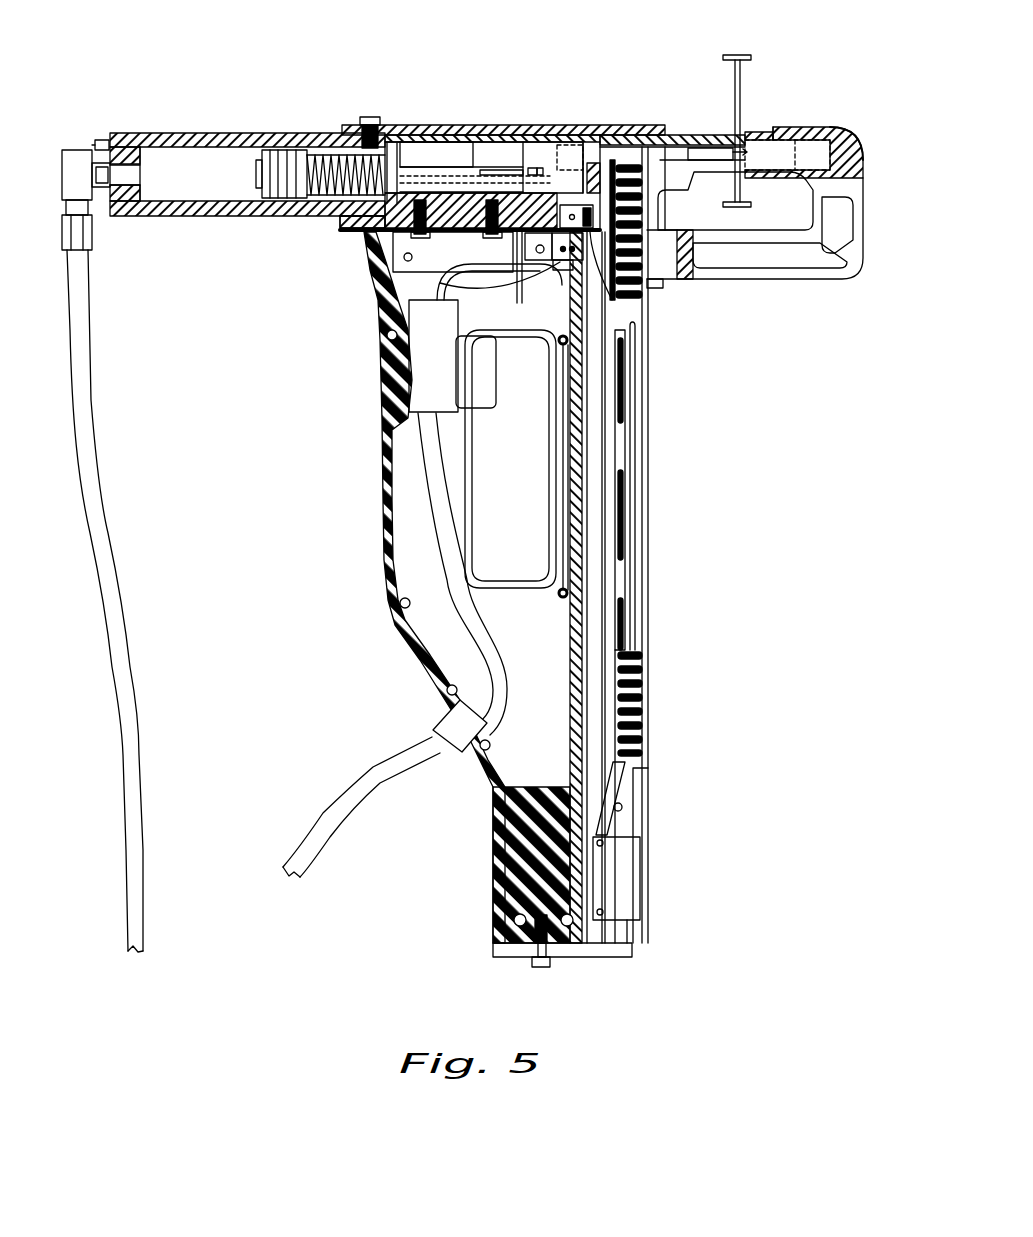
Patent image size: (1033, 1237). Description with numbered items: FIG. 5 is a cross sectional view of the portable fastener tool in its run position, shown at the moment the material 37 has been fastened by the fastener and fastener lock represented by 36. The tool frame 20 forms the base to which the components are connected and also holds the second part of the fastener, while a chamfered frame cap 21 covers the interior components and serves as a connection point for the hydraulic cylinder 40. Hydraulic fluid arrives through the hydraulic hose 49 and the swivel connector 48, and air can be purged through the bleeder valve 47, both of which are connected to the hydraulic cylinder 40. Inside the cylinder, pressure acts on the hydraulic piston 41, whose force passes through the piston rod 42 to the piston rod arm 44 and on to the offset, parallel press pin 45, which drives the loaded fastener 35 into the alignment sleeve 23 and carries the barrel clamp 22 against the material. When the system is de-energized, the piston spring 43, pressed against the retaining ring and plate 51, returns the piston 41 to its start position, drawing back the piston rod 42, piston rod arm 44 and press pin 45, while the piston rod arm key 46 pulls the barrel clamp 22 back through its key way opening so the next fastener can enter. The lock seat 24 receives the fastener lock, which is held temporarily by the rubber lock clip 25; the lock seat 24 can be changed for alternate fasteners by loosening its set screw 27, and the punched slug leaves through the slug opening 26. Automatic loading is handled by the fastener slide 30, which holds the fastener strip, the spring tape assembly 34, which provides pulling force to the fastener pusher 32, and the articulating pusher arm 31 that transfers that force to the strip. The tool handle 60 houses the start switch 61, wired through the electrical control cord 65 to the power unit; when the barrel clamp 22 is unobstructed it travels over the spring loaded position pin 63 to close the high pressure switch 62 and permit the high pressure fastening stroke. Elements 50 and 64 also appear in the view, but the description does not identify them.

The tool frame 20 is at (793, 257).
The frame cap 21 is at (478, 125).
The barrel clamp 22 is at (583, 142).
The alignment sleeve 23 is at (708, 135).
The lock seat 24 is at (825, 140).
The lock clip 25 is at (795, 133).
The slug opening 26 is at (858, 152).
The set screw 27 is at (820, 150).
The fastener slide 30 is at (650, 452).
The articulating pusher arm 31 is at (613, 793).
The fastener pusher 32 is at (623, 882).
The spring tape assembly 34 is at (605, 375).
The loaded fastener 35 is at (637, 677).
The fastener and fastener lock 36 is at (768, 132).
The material 37 is at (742, 66).
The hydraulic cylinder 40 is at (228, 135).
The hydraulic piston 41 is at (286, 200).
The piston rod 42 is at (430, 142).
The piston spring 43 is at (326, 148).
The piston rod arm 44 is at (548, 132).
The press pin 45 is at (632, 142).
The piston rod arm key 46 is at (516, 142).
The bleeder valve 47 is at (92, 141).
The swivel connector 48 is at (88, 190).
The hydraulic hose 49 is at (78, 382).
The mounting plate 50 is at (398, 258).
The retaining ring and plate 51 is at (366, 200).
The tool handle 60 is at (378, 526).
The start switch 61 is at (442, 378).
The high pressure switch 62 is at (522, 303).
The spring loaded position pin 63 is at (613, 336).
The switch block 64 is at (598, 294).
The electrical control cord 65 is at (332, 812).